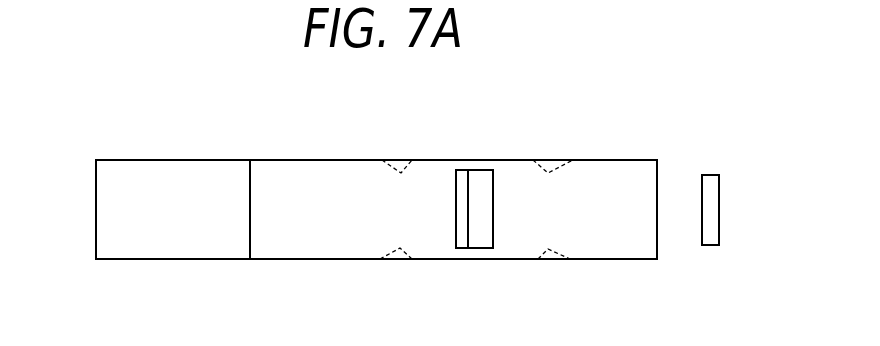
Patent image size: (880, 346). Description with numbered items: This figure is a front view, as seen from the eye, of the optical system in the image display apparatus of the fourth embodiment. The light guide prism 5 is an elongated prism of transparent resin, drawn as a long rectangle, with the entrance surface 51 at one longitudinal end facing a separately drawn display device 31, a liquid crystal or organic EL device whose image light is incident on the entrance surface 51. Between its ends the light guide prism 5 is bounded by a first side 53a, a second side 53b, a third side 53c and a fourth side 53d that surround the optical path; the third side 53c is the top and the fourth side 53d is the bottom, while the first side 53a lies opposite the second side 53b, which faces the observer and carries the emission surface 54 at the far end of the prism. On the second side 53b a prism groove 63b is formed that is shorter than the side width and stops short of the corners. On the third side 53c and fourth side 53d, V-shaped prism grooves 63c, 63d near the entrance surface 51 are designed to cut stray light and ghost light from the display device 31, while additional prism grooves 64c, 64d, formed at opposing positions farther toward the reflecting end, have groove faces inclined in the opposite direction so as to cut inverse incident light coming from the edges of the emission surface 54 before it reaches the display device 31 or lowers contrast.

The light guide prism 5 is at (589, 144).
The entrance surface 51 is at (658, 187).
The emission surface 54 is at (130, 215).
The first side 53a is at (302, 178).
The second side 53b is at (272, 180).
The third side 53c is at (353, 160).
The fourth side 53d is at (328, 260).
The prism groove 63b is at (477, 188).
The prism groove 63c is at (548, 172).
The prism groove 63d is at (550, 260).
The prism groove 64c is at (402, 158).
The prism groove 64d is at (399, 260).
The display device 31 is at (720, 204).